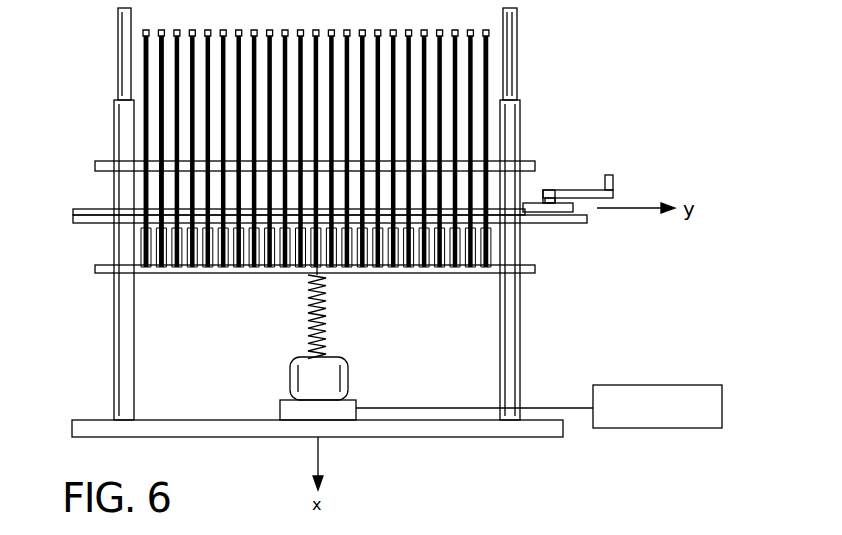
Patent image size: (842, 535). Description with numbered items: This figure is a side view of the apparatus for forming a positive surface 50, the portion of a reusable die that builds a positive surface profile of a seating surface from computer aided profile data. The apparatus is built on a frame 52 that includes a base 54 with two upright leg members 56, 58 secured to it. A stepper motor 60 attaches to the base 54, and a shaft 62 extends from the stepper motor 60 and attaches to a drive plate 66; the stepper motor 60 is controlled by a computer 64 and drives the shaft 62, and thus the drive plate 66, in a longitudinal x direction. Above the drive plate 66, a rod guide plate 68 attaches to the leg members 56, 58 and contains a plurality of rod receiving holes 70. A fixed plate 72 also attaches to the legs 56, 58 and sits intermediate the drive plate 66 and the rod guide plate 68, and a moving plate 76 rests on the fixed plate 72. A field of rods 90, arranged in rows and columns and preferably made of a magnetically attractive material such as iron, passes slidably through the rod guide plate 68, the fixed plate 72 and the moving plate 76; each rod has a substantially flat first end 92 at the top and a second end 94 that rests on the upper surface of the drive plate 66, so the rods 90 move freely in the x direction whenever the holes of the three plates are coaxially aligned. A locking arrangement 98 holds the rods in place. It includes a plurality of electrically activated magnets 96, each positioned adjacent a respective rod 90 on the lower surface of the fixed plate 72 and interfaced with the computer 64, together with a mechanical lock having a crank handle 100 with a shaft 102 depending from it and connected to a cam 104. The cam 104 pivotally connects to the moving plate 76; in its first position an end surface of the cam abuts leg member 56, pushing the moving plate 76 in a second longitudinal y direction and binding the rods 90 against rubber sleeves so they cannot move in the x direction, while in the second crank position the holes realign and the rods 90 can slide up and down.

The apparatus for forming a positive surface 50 is at (578, 88).
The frame 52 is at (520, 305).
The base 54 is at (510, 437).
The leg member 56 is at (520, 375).
The leg member 58 is at (114, 365).
The stepper motor 60 is at (348, 368).
The shaft 62 is at (328, 302).
The computer 64 is at (650, 385).
The drive plate 66 is at (535, 267).
The rod guide plate 68 is at (538, 163).
The rod receiving holes 70 is at (490, 162).
The fixed plate 72 is at (587, 222).
The moving plate 76 is at (75, 212).
The rods 90 is at (492, 55).
The first end 92 is at (486, 32).
The second end 94 is at (486, 272).
The electrically activated magnets 96 is at (165, 235).
The locking arrangement 98 is at (641, 165).
The crank handle 100 is at (613, 182).
The shaft 102 is at (535, 205).
The cam 104 is at (548, 198).